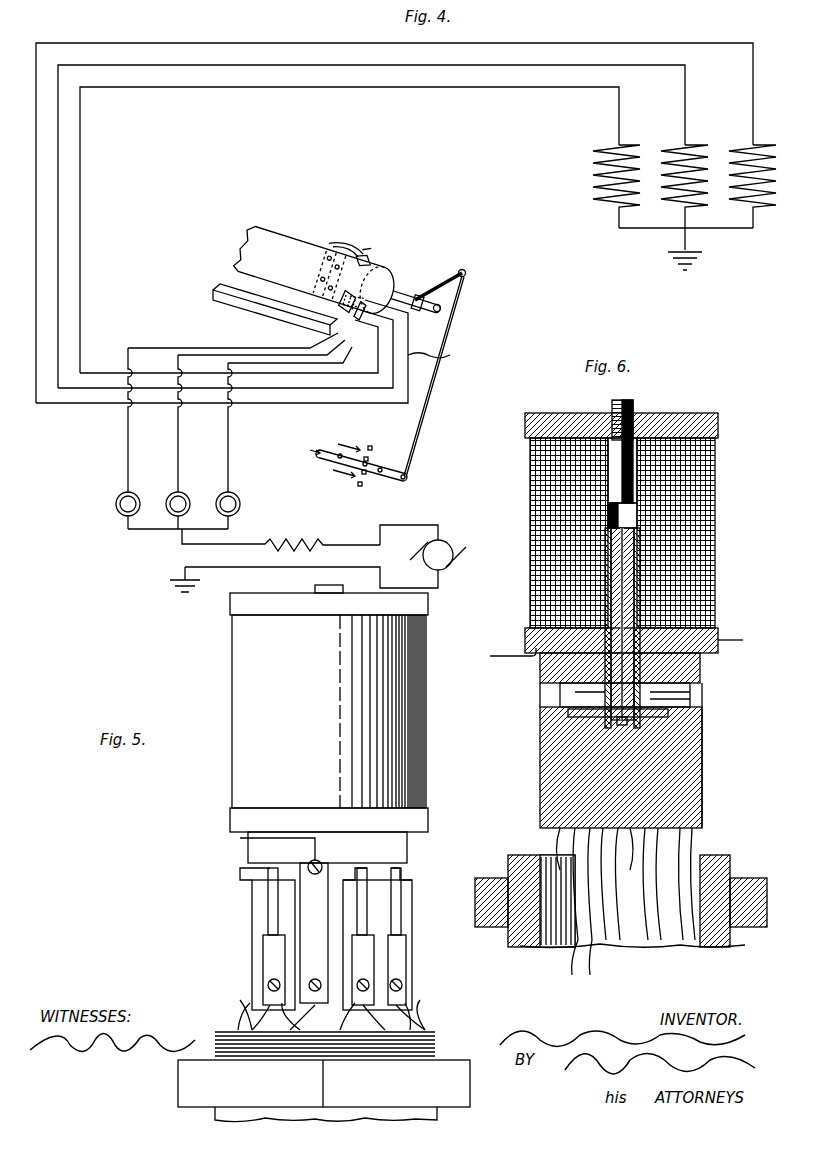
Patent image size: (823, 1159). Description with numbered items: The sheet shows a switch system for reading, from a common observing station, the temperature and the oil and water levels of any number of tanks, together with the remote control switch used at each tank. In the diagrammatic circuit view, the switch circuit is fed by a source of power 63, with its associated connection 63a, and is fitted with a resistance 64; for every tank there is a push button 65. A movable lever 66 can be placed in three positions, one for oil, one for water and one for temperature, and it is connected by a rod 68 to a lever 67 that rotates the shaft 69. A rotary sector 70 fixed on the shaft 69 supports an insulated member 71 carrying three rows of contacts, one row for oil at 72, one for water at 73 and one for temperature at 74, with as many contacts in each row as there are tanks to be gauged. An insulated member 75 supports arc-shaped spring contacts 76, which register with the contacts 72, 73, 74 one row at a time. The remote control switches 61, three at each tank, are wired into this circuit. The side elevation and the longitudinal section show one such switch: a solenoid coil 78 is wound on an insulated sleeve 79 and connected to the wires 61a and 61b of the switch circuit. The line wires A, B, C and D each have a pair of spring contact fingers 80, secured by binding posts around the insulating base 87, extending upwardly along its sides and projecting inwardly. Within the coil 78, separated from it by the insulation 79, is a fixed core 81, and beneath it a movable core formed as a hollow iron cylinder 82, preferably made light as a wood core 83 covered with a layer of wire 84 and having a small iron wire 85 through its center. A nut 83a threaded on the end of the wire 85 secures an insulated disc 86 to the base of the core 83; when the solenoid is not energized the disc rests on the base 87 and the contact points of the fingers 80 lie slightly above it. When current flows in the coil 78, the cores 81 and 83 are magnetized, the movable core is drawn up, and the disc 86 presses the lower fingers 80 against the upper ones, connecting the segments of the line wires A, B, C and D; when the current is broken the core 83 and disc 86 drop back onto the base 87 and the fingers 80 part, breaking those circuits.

In FIG. 4, the remote control switches 61 is at (595, 180).
In FIG. 4, the wire of the switch circuit 61a is at (128, 470).
In FIG. 6, the wire of the switch circuit 61a is at (735, 644).
In FIG. 4, the wire of the switch circuit 61b is at (446, 351).
In FIG. 5, the wire of the switch circuit 61b is at (292, 1080).
In FIG. 6, the wire of the switch circuit 61b is at (494, 642).
In FIG. 4, the source of power 63 is at (456, 538).
In FIG. 4, the ground connection 63a is at (182, 581).
In FIG. 4, the resistance 64 is at (315, 543).
In FIG. 4, the push button 65 is at (118, 512).
In FIG. 4, the movable lever 66 is at (392, 478).
In FIG. 4, the lever 67 is at (456, 270).
In FIG. 4, the rod 68 is at (430, 400).
In FIG. 4, the shaft 69 is at (442, 310).
In FIG. 4, the rotary sector 70 is at (423, 278).
In FIG. 4, the insulated member 71 is at (319, 259).
In FIG. 4, the contacts 72 is at (305, 268).
In FIG. 4, the contacts 73 is at (317, 244).
In FIG. 4, the contacts 74 is at (373, 243).
In FIG. 4, the insulated member 75 is at (238, 312).
In FIG. 4, the spring contacts 76 is at (302, 314).
In FIG. 5, the solenoid coil 78 is at (426, 766).
In FIG. 6, the solenoid coil 78 is at (716, 565).
In FIG. 6, the insulated sleeve 79 is at (648, 502).
In FIG. 5, the spring contact fingers 80 is at (268, 870).
In FIG. 6, the spring contact fingers 80 is at (565, 708).
In FIG. 6, the fixed core 81 is at (640, 430).
In FIG. 6, the hollow iron cylinder 82 is at (640, 535).
In FIG. 6, the wood core 83 is at (640, 600).
In FIG. 6, the nut 83a is at (615, 728).
In FIG. 6, the layer of wire 84 is at (610, 600).
In FIG. 6, the small iron wire 85 is at (612, 563).
In FIG. 6, the insulated disc 86 is at (665, 738).
In FIG. 5, the base 87 is at (258, 918).
In FIG. 6, the base 87 is at (548, 774).
In FIG. 6, the line wire A is at (582, 964).
In FIG. 6, the line wire B is at (700, 845).
In FIG. 5, the line wire C is at (415, 1000).
In FIG. 5, the line wire D is at (246, 1010).